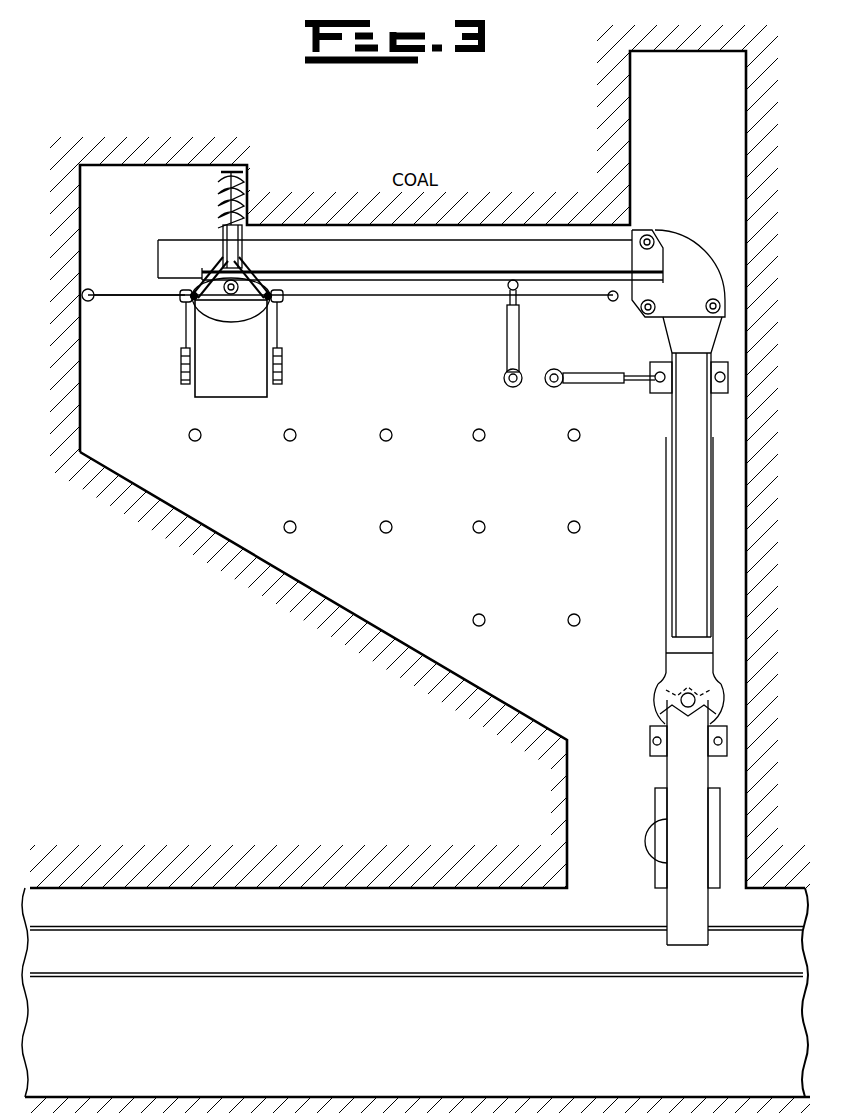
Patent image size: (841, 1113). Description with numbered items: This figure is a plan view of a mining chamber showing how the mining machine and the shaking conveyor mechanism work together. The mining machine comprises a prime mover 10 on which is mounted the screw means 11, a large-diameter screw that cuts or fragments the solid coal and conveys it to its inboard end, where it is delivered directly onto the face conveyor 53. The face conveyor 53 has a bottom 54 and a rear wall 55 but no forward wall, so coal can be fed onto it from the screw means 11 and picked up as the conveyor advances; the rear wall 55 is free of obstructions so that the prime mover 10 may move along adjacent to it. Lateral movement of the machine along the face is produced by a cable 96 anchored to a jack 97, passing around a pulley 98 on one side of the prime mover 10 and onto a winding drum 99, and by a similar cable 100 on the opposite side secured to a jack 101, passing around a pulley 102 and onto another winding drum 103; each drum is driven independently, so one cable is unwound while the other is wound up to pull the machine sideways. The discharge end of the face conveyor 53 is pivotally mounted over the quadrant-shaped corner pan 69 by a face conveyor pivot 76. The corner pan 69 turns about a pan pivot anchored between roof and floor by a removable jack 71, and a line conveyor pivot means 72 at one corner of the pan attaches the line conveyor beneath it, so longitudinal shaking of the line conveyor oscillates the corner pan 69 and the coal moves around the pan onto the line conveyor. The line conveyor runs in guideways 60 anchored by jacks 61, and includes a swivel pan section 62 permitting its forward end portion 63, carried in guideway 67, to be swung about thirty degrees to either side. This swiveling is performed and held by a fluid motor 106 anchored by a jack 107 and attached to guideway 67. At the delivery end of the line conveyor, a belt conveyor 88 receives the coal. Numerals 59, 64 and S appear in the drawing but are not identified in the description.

The prime mover 10 is at (236, 390).
The screw means 11 is at (218, 204).
The face conveyor 53 is at (412, 283).
The bottom 54 is at (442, 251).
The rear wall 55 is at (357, 281).
The support tube 59 is at (678, 776).
The guideways 60 is at (655, 728).
The jacks 61 is at (714, 742).
The swivel pan section 62 is at (667, 702).
The forward end portion 63 is at (681, 483).
The head 64 is at (674, 327).
The guideway 67 is at (657, 393).
The corner pan 69 is at (690, 263).
The removable jack 71 is at (644, 313).
The line conveyor pivot means 72 is at (710, 300).
The face conveyor pivot 76 is at (651, 238).
The belt conveyor 88 is at (511, 970).
The cable 96 is at (462, 292).
The jack 97 is at (611, 301).
The pulley 98 is at (284, 300).
The winding drum 99 is at (283, 366).
The cable 100 is at (141, 292).
The jack 101 is at (89, 300).
The pulley 102 is at (185, 302).
The winding drum 103 is at (182, 370).
The fluid motor 106 is at (507, 348).
The jack 107 is at (519, 388).
The switch S is at (650, 841).